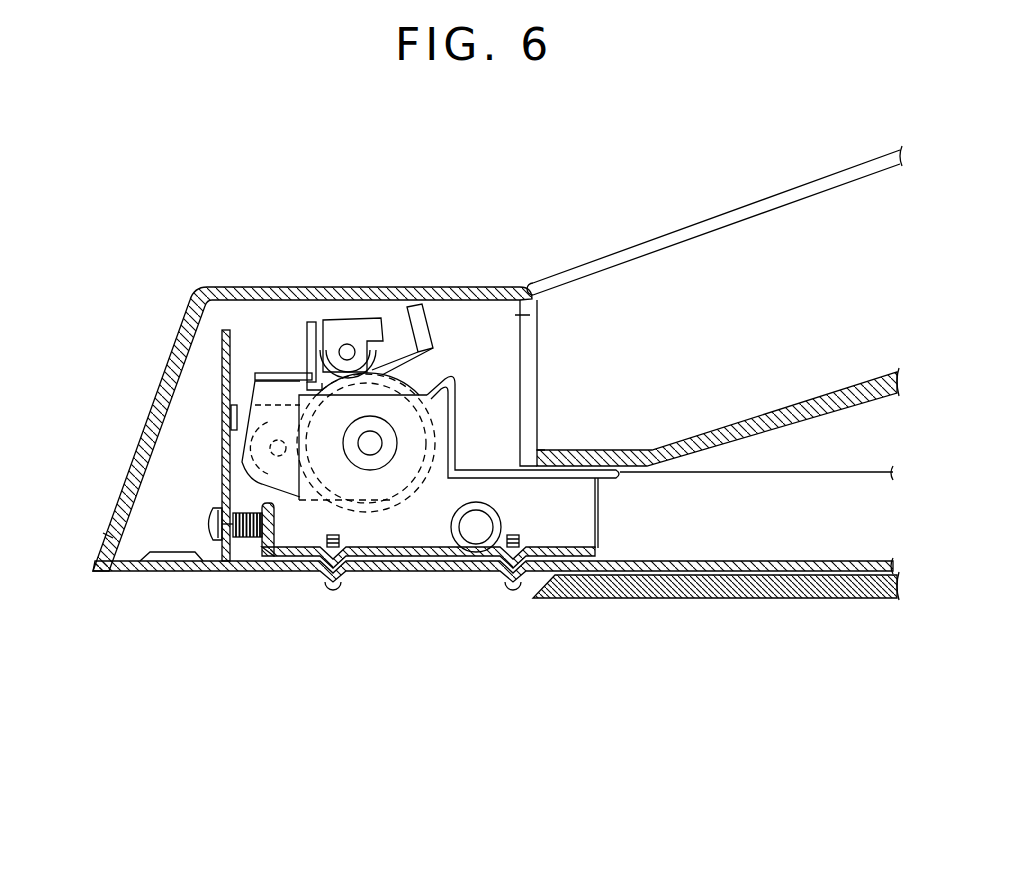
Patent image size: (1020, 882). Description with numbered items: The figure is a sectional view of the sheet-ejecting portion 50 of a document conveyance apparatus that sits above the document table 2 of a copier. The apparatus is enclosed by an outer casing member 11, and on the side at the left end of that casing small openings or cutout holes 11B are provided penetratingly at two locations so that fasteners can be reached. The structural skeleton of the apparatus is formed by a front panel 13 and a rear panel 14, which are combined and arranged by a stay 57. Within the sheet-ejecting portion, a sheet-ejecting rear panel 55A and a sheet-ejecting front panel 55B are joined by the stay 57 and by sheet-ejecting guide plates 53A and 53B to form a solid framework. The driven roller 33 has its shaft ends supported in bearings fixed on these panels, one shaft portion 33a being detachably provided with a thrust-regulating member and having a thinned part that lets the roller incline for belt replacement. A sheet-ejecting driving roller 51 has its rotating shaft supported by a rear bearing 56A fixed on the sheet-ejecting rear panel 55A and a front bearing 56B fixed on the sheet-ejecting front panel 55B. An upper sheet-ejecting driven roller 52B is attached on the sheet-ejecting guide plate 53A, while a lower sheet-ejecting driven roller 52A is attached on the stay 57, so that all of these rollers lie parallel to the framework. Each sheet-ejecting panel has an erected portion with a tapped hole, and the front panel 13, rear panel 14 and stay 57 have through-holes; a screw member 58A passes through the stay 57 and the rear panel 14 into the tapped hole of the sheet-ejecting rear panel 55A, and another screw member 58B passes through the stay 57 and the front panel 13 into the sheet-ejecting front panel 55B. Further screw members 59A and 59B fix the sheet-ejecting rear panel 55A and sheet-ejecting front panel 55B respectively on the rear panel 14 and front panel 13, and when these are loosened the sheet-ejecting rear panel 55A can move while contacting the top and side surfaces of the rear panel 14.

The document table 2 is at (713, 590).
The outer casing member 11 is at (232, 290).
The cutout holes 11B is at (103, 533).
The front panel 13 is at (493, 623).
The rear panel 14 is at (233, 567).
The driven roller 33 is at (390, 568).
The shaft portion 33a is at (475, 532).
The sheet-ejecting portion 50 is at (352, 256).
The sheet-ejecting driving roller 51 is at (420, 367).
The lower sheet-ejecting driven roller 52A is at (262, 484).
The upper sheet-ejecting driven roller 52B is at (383, 318).
The sheet-ejecting guide plate 53A is at (410, 305).
The sheet-ejecting guide plate 53B is at (457, 415).
The sheet-ejecting rear panel 55A is at (385, 631).
The sheet-ejecting front panel 55B is at (303, 545).
The rear bearing 56A is at (366, 566).
The front bearing 56B is at (373, 452).
The stay 57 is at (307, 340).
The screw member 58A is at (143, 590).
The screw member 58B is at (160, 560).
The screw member 59A is at (399, 613).
The screw member 59B is at (333, 560).